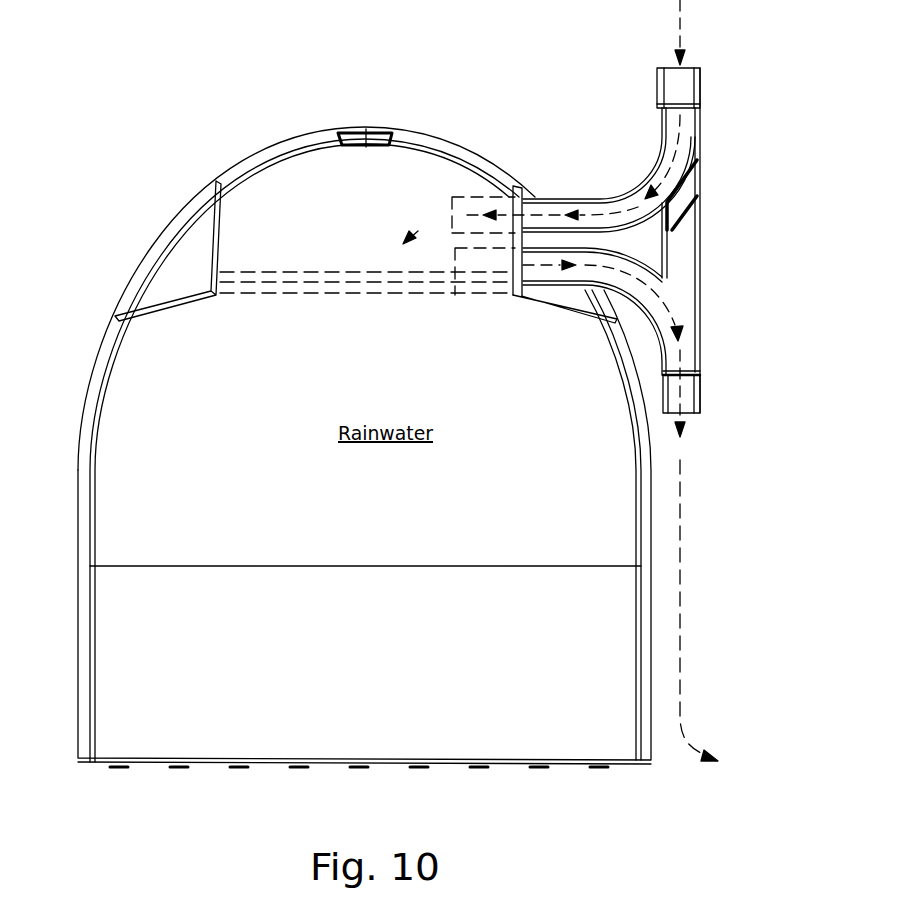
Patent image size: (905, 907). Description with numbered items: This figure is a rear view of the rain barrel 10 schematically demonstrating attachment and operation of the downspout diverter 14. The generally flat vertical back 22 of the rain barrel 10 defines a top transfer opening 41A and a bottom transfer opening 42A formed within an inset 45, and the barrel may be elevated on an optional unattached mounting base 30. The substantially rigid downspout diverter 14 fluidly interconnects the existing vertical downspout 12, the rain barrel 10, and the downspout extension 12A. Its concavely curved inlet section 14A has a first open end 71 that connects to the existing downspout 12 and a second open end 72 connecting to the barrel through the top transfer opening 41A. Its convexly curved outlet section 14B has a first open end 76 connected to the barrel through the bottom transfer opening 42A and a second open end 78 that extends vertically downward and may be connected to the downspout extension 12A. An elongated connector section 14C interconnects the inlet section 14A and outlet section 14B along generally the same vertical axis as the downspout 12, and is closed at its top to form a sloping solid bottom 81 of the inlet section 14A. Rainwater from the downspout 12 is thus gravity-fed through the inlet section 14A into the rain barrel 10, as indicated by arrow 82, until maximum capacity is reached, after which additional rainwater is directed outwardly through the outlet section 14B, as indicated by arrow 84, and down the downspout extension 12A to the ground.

The rain barrel 10 is at (229, 124).
The back 22 is at (106, 432).
The mounting base 30 is at (365, 619).
The inset 45 is at (152, 303).
The first open end 76 is at (450, 292).
The second open end 72 is at (452, 200).
The arrow 82 is at (447, 217).
The top transfer opening 41A is at (516, 182).
The bottom transfer opening 42A is at (513, 297).
The downspout diverter 14 is at (724, 129).
The inlet section 14A is at (648, 167).
The outlet section 14B is at (603, 290).
The connector section 14C is at (685, 240).
The first open end 71 is at (660, 97).
The second open end 78 is at (693, 412).
The sloping solid bottom 81 is at (702, 182).
The arrow 84 is at (683, 365).
The downspout 12 is at (680, 23).
The downspout extension 12A is at (680, 528).